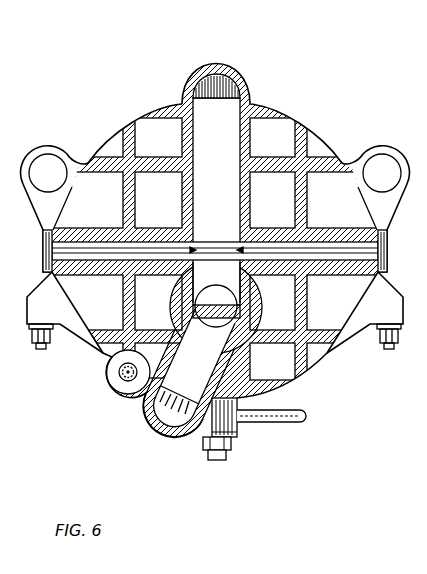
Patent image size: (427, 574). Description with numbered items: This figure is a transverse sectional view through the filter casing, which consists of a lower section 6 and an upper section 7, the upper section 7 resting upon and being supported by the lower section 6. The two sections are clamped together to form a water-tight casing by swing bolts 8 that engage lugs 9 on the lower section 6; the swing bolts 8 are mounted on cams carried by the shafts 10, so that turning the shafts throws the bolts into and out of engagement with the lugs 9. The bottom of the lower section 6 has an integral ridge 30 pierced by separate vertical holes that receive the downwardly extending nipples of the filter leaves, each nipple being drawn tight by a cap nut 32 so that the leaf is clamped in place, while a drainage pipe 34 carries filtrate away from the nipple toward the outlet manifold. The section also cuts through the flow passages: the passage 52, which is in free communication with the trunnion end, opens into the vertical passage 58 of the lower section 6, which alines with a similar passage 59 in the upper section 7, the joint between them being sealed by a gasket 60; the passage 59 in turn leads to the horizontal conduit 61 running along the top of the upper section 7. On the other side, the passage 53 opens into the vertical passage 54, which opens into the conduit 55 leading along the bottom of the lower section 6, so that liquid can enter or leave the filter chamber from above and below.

The lower section 6 is at (315, 361).
The upper section 7 is at (311, 138).
The swing bolts 8 is at (390, 252).
The lugs 9 is at (215, 312).
The cam shafts 10 is at (383, 164).
The ridge 30 is at (238, 429).
The cap nut 32 is at (231, 452).
The drainage pipe 34 is at (281, 413).
The passage 52 is at (222, 300).
The passage 53 is at (232, 326).
The vertical passage 54 is at (190, 368).
The conduit 55 is at (167, 420).
The vertical passage 58 is at (216, 282).
The passage 59 is at (216, 201).
The gasket 60 is at (241, 247).
The horizontal conduit 61 is at (218, 87).